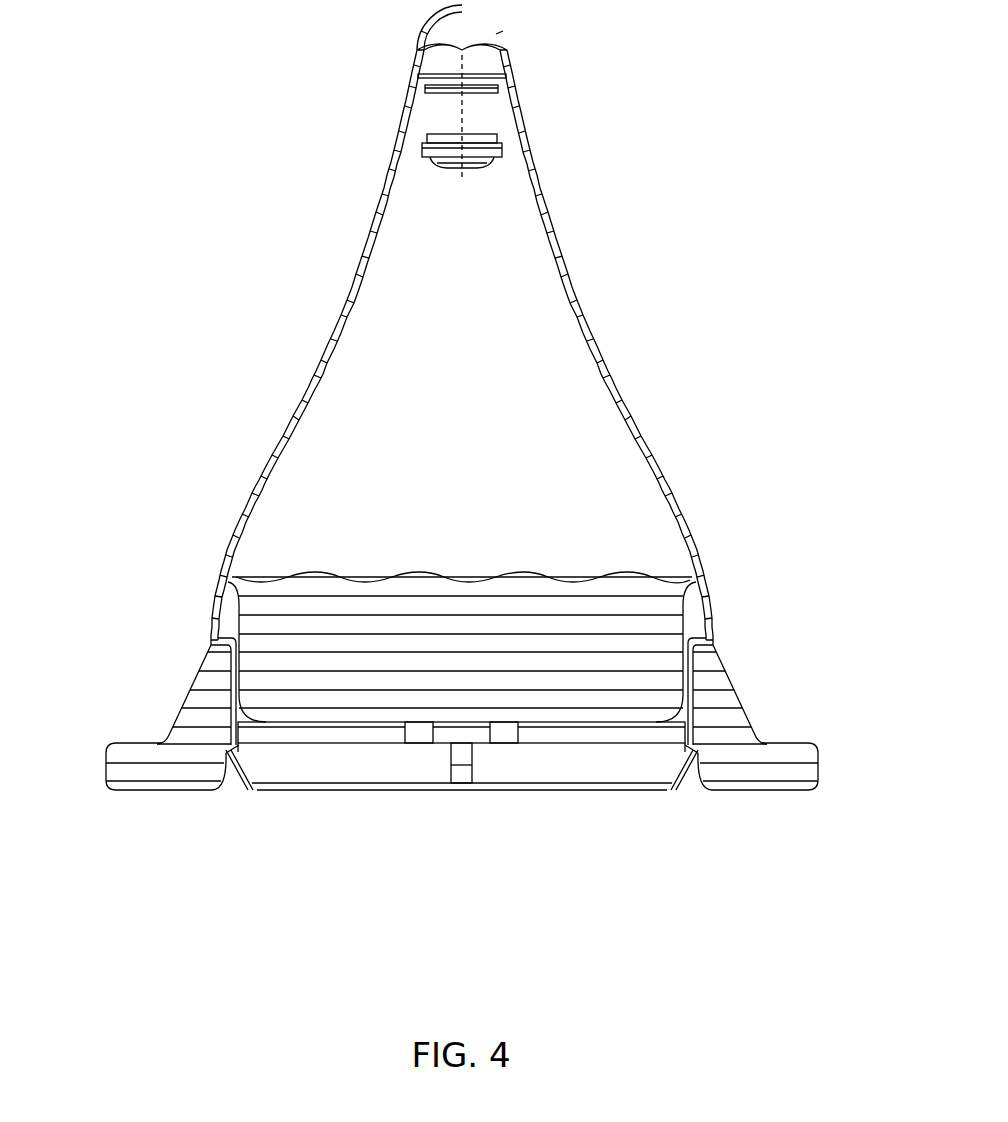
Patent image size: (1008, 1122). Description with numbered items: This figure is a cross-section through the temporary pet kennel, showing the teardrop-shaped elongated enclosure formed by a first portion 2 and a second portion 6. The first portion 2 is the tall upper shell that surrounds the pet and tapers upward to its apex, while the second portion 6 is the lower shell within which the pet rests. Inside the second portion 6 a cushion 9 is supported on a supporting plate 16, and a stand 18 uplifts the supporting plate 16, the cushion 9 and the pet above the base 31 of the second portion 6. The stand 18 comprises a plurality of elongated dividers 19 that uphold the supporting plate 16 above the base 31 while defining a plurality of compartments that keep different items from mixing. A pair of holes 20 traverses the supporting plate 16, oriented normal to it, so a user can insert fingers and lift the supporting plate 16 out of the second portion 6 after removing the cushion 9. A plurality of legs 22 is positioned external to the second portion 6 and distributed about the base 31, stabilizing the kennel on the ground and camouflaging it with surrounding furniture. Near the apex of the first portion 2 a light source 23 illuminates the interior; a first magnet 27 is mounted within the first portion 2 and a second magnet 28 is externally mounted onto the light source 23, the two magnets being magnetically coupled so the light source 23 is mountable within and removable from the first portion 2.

The first portion 2 is at (662, 474).
The second portion 6 is at (722, 624).
The cushion 9 is at (229, 579).
The supporting plate 16 is at (287, 735).
The stand 18 is at (644, 766).
The plurality of elongated dividers 19 is at (320, 772).
The pair of holes 20 is at (420, 735).
The plurality of legs 22 is at (110, 772).
The light source 23 is at (490, 160).
The first magnet 27 is at (493, 90).
The second magnet 28 is at (445, 134).
The base 31 is at (362, 788).